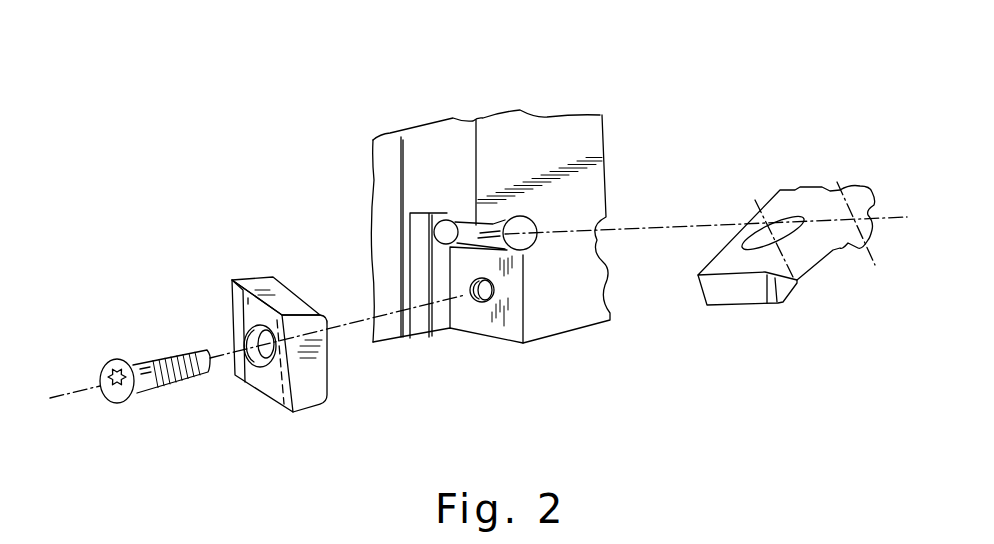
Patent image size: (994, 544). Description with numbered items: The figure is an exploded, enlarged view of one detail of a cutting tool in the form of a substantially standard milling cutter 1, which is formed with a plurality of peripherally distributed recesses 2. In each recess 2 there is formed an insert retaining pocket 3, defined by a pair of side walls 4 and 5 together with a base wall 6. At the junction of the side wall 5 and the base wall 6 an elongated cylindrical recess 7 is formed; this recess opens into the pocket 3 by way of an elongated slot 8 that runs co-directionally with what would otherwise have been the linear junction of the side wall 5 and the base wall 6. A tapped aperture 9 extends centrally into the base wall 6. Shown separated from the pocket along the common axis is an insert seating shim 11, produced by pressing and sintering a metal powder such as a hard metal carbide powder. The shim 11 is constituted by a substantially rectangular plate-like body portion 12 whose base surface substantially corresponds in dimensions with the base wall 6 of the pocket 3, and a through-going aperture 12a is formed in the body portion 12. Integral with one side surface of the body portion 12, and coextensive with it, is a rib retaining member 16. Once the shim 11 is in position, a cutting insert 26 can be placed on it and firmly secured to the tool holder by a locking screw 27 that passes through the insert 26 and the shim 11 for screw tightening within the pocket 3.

The milling cutter 1 is at (504, 234).
The recess 2 is at (447, 140).
The insert retaining pocket 3 is at (458, 345).
The side wall 4 is at (438, 325).
The side wall 5 is at (497, 225).
The base wall 6 is at (508, 328).
The elongated cylindrical recess 7 is at (533, 218).
The elongated slot 8 is at (523, 253).
The tapped aperture 9 is at (478, 301).
The insert seating shim 11 is at (767, 217).
The body portion 12 is at (767, 221).
The through-going aperture 12a is at (752, 243).
The rib retaining member 16 is at (857, 203).
The cutting insert 26 is at (267, 395).
The locking screw 27 is at (150, 387).